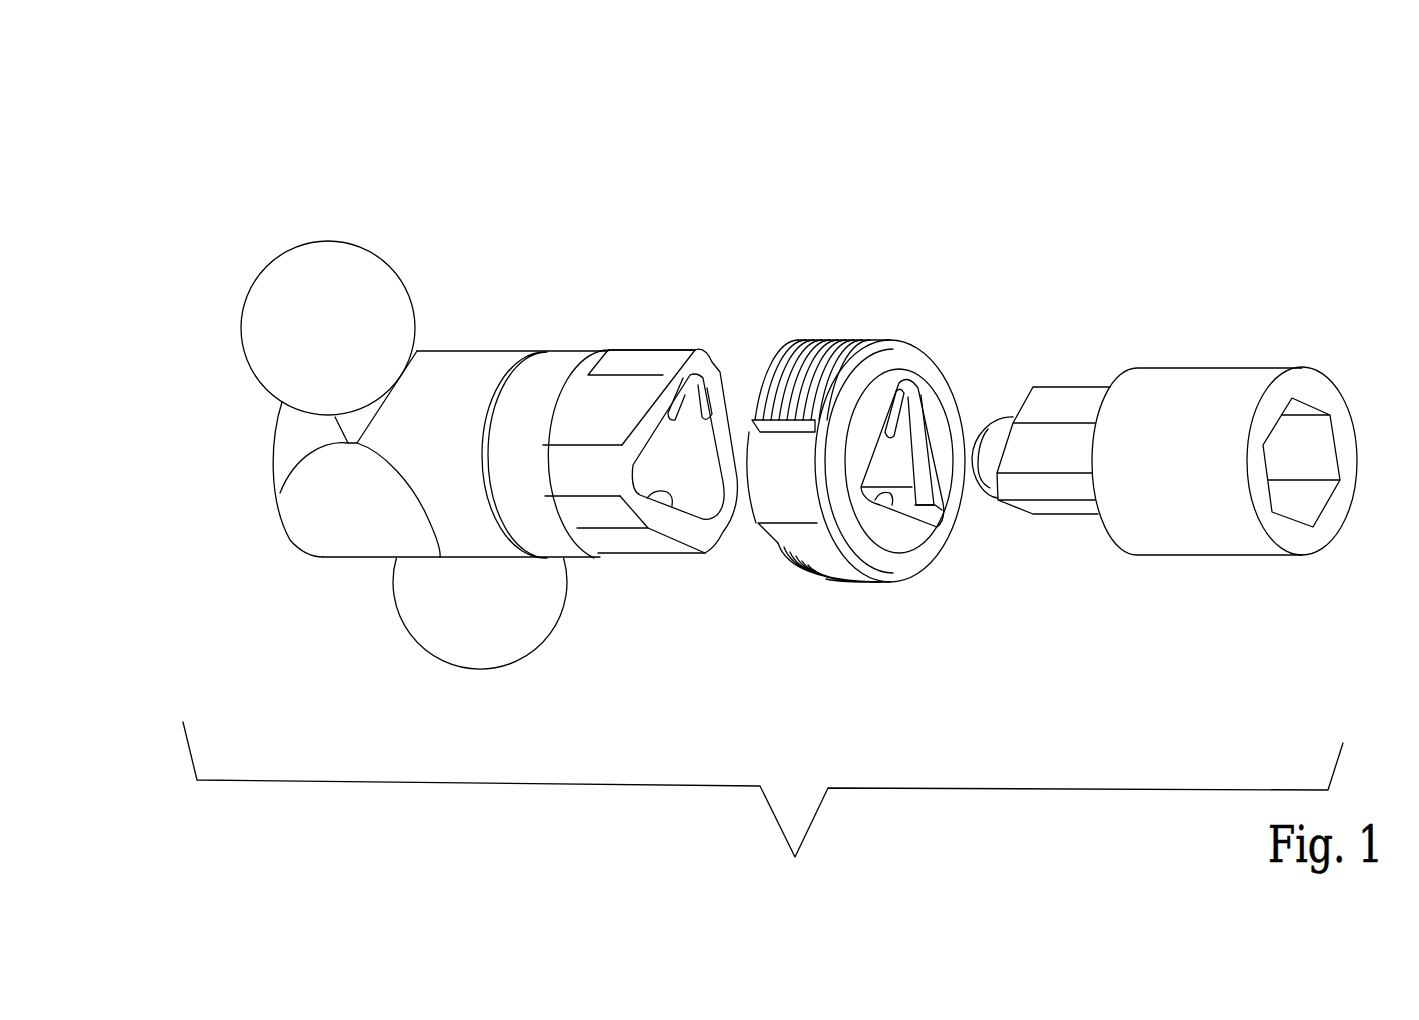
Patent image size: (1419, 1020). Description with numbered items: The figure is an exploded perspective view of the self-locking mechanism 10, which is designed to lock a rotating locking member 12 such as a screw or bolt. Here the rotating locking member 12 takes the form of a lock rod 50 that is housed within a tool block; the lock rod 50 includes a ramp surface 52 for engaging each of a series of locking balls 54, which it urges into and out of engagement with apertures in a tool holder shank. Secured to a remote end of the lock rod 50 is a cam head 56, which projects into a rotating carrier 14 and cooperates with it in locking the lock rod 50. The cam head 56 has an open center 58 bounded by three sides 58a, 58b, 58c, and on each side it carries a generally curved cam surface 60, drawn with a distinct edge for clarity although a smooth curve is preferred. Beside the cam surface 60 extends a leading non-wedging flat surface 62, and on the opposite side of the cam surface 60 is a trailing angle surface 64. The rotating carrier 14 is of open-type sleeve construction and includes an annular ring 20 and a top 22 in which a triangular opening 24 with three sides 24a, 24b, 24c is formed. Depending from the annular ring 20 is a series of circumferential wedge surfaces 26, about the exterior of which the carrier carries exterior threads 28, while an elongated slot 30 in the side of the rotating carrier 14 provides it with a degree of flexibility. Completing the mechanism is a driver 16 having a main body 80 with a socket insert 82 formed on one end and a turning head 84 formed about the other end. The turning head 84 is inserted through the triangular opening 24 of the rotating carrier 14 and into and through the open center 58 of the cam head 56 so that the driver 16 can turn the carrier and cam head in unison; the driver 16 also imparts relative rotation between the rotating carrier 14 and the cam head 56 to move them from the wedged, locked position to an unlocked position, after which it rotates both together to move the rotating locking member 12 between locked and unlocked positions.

The self-locking mechanism 10 is at (1015, 240).
The rotating locking member 12 is at (503, 231).
The rotating carrier 14 is at (838, 272).
The driver 16 is at (1204, 305).
The annular ring 20 is at (752, 512).
The top 22 is at (919, 515).
The triangular opening 24 is at (914, 451).
The side 24a is at (887, 495).
The side 24b is at (920, 415).
The side 24c is at (900, 395).
The circumferential wedge surfaces 26 is at (763, 437).
The exterior threads 28 is at (798, 375).
The elongated slot 30 is at (940, 522).
The lock rod 50 is at (285, 457).
The ramp surface 52 is at (355, 446).
The locking balls 54 is at (297, 270).
The cam head 56 is at (648, 287).
The open center 58 is at (686, 411).
The side 58a is at (710, 378).
The side 58b is at (698, 383).
The side 58c is at (652, 498).
The cam surface 60 is at (608, 350).
The leading non-wedging flat surface 62 is at (597, 397).
The trailing angle surface 64 is at (652, 360).
The main body 80 is at (1200, 537).
The socket insert 82 is at (1313, 433).
The turning head 84 is at (1086, 357).